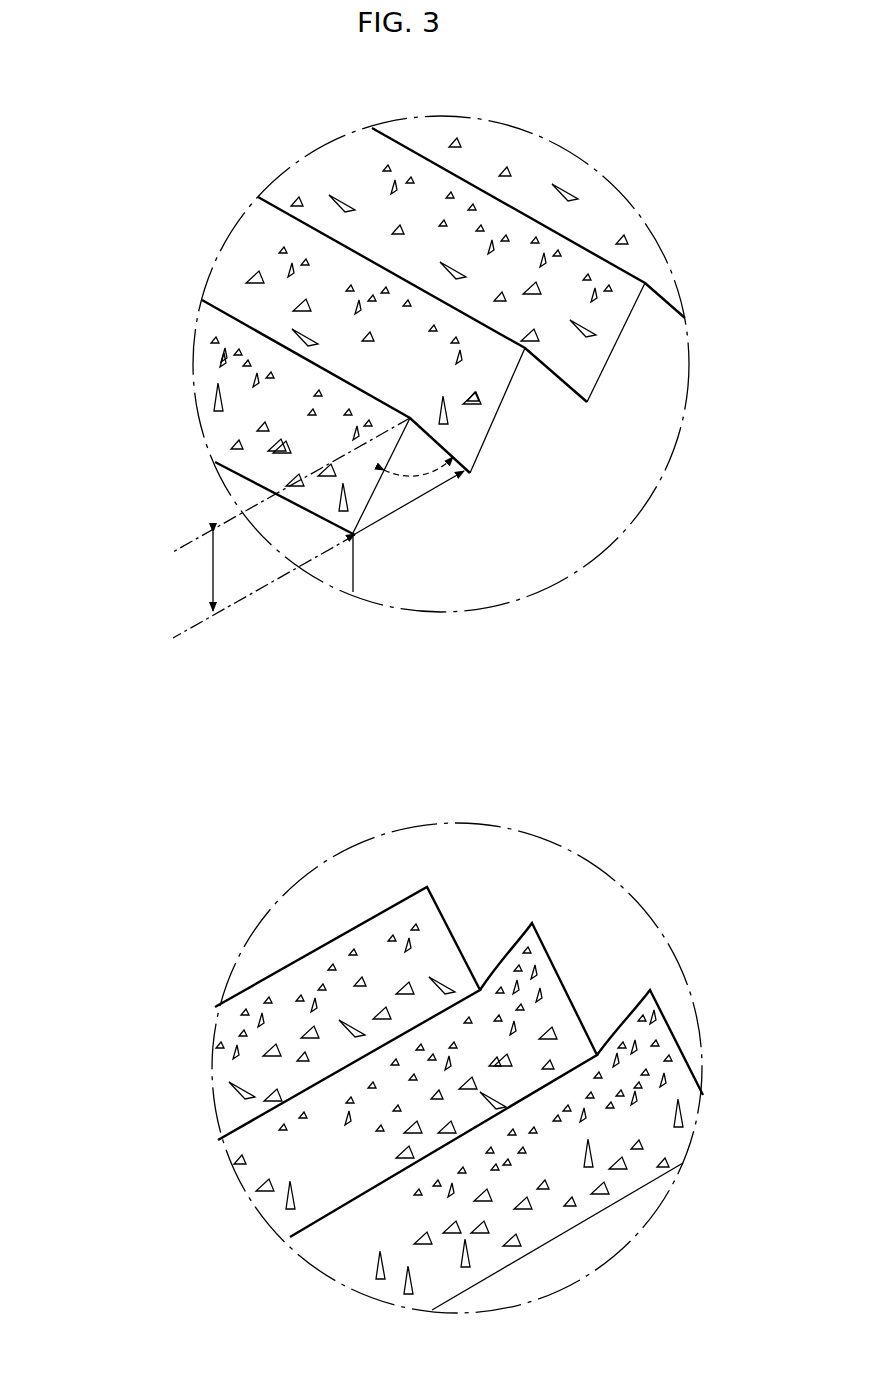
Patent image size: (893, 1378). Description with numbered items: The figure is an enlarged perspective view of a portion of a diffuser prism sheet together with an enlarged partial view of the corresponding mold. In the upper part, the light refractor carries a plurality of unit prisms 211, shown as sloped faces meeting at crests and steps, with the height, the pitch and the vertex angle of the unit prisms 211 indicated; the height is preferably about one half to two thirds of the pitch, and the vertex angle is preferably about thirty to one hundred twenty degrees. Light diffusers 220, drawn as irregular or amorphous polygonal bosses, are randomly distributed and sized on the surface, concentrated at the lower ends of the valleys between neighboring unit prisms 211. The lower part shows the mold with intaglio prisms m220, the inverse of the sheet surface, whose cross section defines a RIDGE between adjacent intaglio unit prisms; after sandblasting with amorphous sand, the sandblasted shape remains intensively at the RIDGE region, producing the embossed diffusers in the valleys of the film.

The light diffusers 220 is at (222, 393).
The unit prisms 211 is at (632, 307).
The intaglio prisms m220 is at (272, 1046).
The ridge RIDGE is at (532, 1072).